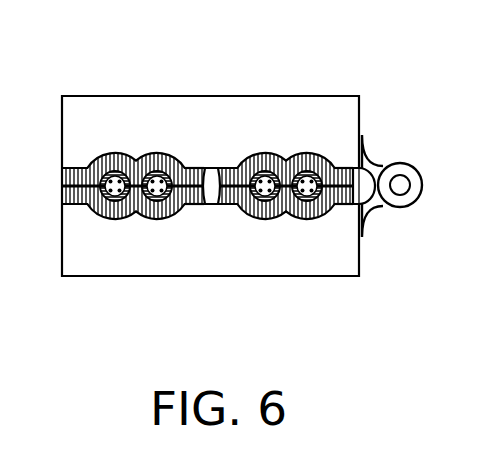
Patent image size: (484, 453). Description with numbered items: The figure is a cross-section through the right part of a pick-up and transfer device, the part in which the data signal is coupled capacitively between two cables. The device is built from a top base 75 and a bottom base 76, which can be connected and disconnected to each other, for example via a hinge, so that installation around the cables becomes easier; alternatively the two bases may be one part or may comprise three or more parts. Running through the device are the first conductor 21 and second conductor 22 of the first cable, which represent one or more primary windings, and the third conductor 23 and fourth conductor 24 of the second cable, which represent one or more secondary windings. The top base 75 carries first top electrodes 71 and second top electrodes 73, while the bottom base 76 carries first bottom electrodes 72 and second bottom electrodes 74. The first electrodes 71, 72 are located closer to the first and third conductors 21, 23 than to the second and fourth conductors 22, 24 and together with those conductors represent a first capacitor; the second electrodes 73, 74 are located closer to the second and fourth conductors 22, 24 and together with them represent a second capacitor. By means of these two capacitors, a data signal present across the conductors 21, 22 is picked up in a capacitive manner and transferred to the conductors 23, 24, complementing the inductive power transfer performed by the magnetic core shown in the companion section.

The first conductor 21 is at (160, 167).
The second conductor 22 is at (310, 167).
The third conductor 23 is at (118, 194).
The fourth conductor 24 is at (268, 194).
The first top electrode 71 is at (186, 168).
The first bottom electrode 72 is at (183, 198).
The second top electrode 73 is at (337, 168).
The second bottom electrode 74 is at (336, 198).
The top base 75 is at (75, 128).
The bottom base 76 is at (75, 243).